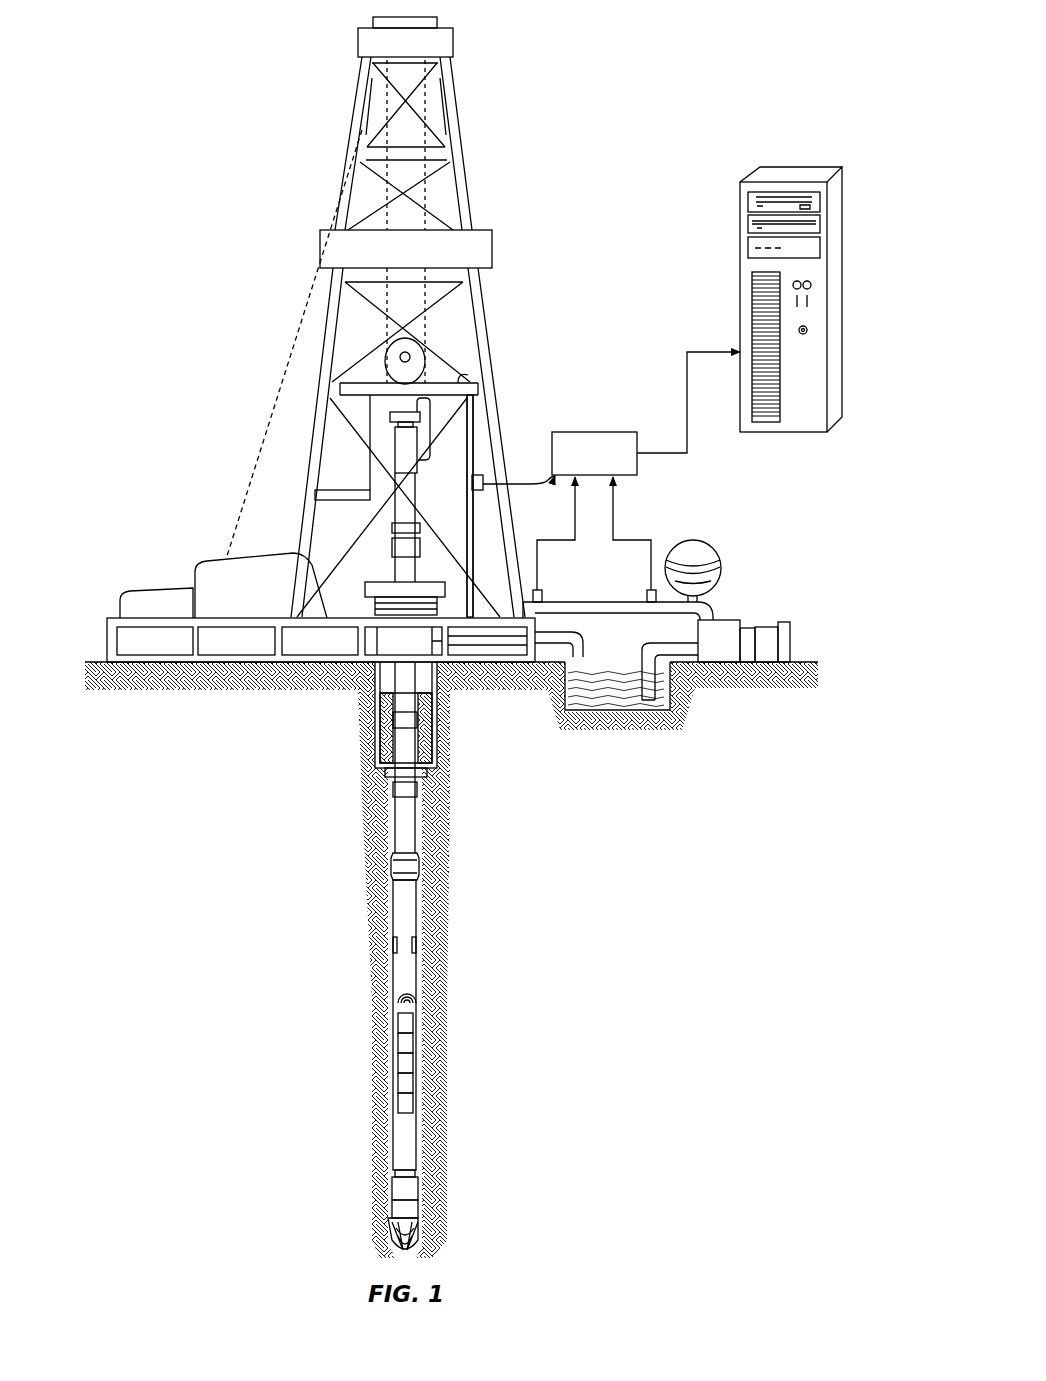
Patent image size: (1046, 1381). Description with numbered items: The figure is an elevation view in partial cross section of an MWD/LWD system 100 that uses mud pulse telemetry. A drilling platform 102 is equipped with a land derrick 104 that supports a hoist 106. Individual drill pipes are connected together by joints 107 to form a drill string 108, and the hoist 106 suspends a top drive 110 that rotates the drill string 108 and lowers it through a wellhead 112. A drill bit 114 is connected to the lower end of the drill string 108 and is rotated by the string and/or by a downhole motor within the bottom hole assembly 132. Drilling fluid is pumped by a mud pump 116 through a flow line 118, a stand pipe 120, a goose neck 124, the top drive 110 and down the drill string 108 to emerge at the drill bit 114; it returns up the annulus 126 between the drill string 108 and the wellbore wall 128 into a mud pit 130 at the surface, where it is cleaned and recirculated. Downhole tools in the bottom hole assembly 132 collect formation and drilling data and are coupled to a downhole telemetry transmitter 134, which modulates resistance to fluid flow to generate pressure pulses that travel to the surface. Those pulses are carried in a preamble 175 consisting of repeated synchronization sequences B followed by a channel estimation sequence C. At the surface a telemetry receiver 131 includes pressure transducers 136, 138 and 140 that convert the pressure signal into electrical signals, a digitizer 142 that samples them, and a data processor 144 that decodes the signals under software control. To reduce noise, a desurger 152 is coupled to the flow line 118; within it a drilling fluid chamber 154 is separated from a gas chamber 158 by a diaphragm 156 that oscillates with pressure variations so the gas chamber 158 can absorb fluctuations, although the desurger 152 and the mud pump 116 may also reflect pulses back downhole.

The MWD/LWD system 100 is at (213, 93).
The drilling platform 102 is at (107, 632).
The land derrick 104 is at (456, 93).
The hoist 106 is at (416, 357).
The joints 107 is at (393, 790).
The drill string 108 is at (415, 840).
The top drive 110 is at (398, 436).
The wellhead 112 is at (379, 580).
The drill bit 114 is at (420, 1232).
The mud pump 116 is at (725, 630).
The flow line 118 is at (665, 614).
The stand pipe 120 is at (474, 432).
The goose neck 124 is at (468, 382).
The annulus 126 is at (418, 930).
The wellbore wall 128 is at (418, 865).
The mud pit 130 is at (622, 700).
The telemetry receiver 131 is at (596, 205).
The bottom hole assembly 132 is at (392, 1212).
The downhole telemetry transmitter 134 is at (392, 1190).
The transducer 136 is at (484, 490).
The transducer 138 is at (541, 594).
The transducer 140 is at (647, 594).
The digitizer 142 is at (646, 413).
The data processor 144 is at (740, 195).
The desurger 152 is at (716, 541).
The drilling fluid chamber 154 is at (705, 576).
The diaphragm 156 is at (712, 556).
The gas chamber 158 is at (704, 542).
The preamble 175 is at (392, 1042).